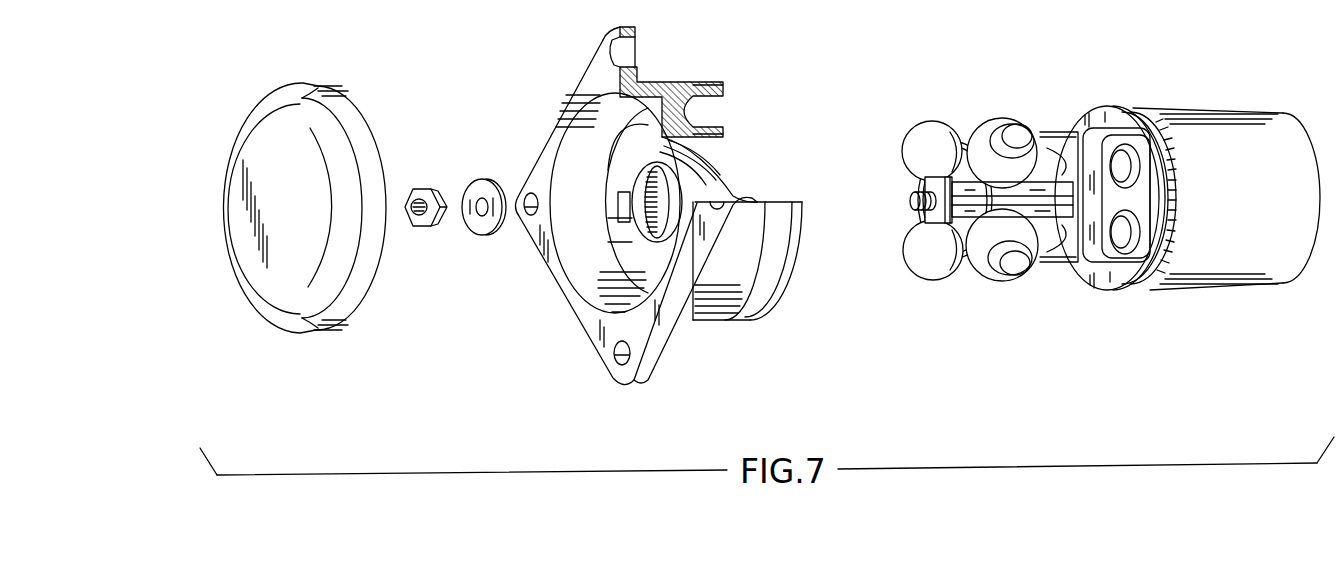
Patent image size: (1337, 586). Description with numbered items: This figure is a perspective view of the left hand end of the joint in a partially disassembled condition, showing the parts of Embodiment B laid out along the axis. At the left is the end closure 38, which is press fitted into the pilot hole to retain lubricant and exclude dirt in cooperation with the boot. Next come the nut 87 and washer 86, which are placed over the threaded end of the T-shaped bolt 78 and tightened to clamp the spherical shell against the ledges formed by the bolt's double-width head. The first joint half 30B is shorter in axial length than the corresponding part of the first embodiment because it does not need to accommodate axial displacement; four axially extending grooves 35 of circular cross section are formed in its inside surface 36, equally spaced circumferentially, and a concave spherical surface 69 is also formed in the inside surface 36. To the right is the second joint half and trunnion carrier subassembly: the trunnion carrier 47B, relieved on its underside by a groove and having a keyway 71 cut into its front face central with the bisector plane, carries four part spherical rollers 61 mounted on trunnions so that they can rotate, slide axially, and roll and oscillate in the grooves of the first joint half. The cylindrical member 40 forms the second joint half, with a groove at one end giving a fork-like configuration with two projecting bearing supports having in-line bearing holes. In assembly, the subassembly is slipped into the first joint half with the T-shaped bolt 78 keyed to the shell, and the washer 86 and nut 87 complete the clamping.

The end closure 38 is at (258, 93).
The nut 87 is at (421, 187).
The washer 86 is at (470, 182).
The inside surface 36 is at (617, 197).
The first joint half 30B is at (580, 82).
The axially extending grooves 35 is at (628, 157).
The concave spherical surface 69 is at (728, 69).
The T-shaped bolt 78 is at (920, 145).
The keyway 71 is at (945, 172).
The part spherical rollers 61 is at (985, 125).
The trunnion carrier 47B is at (1050, 160).
The cylindrical member 40 is at (1193, 104).